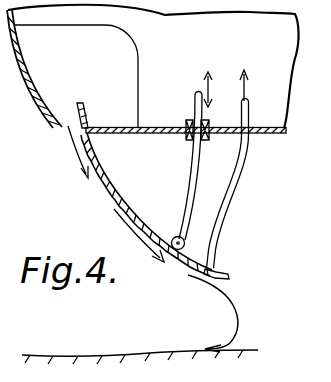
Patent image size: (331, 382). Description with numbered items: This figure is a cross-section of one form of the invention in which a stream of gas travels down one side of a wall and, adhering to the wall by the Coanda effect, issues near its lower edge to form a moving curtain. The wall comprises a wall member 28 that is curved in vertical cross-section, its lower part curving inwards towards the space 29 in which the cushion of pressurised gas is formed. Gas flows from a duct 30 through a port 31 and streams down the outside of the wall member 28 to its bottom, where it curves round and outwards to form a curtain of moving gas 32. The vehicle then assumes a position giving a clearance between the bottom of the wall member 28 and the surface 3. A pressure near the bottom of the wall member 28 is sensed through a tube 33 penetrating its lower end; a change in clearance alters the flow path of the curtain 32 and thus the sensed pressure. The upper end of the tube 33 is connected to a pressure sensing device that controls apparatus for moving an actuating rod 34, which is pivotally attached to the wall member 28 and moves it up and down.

The duct 30 is at (128, 58).
The port 31 is at (70, 128).
The wall member 28 is at (110, 192).
The actuating rod 34 is at (193, 175).
The tube 33 is at (233, 195).
The space 29 is at (290, 248).
The curtain of moving gas 32 is at (237, 303).
The surface 3 is at (147, 352).